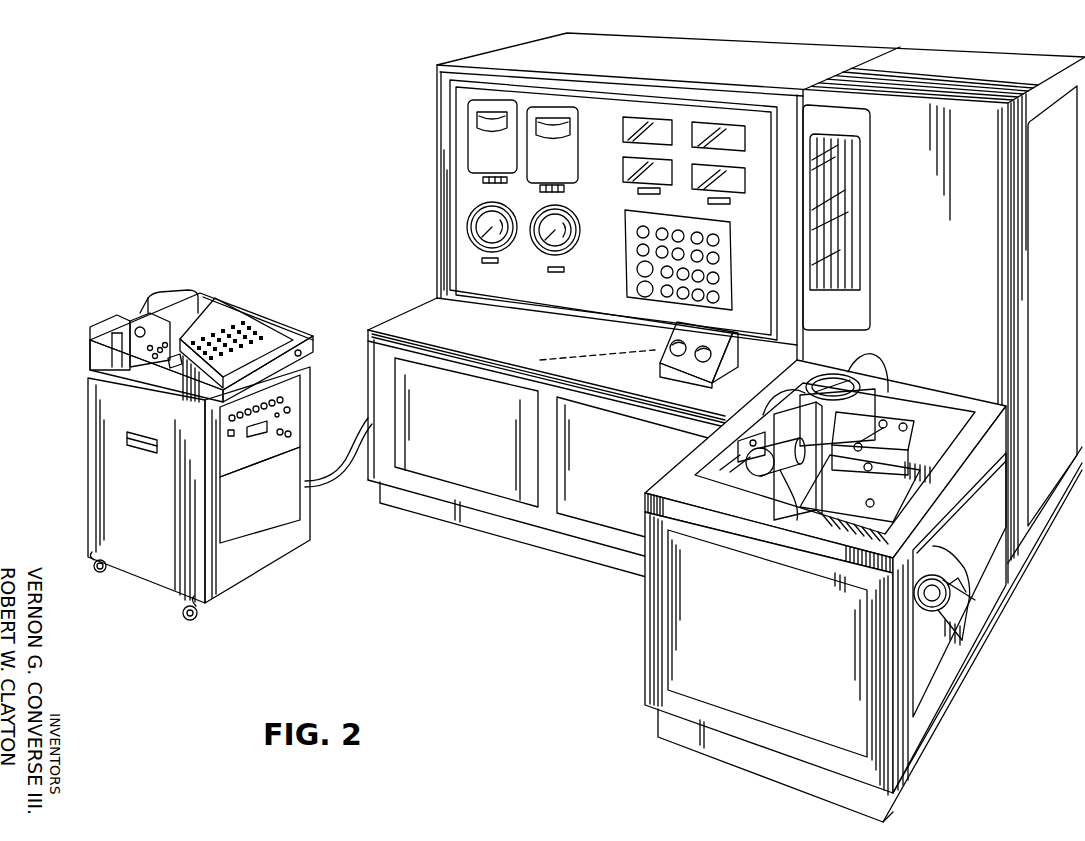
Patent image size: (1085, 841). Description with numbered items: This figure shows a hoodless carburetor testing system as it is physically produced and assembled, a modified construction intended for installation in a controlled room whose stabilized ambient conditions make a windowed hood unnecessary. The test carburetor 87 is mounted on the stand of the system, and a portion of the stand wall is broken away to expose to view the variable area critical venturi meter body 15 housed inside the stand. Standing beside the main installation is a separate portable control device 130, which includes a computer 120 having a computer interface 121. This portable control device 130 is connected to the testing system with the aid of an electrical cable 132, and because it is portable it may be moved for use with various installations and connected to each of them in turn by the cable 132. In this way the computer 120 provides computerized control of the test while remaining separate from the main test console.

The variable area critical venturi meter body 15 is at (937, 603).
The test carburetor 87 is at (818, 376).
The computer 120 is at (283, 492).
The computer interface 121 is at (297, 396).
The portable control device 130 is at (97, 412).
The electrical cable 132 is at (321, 478).